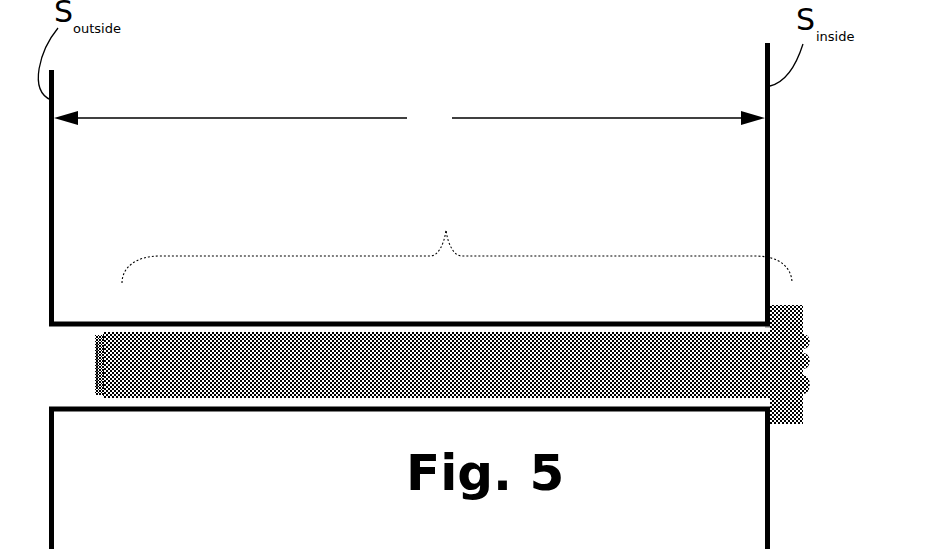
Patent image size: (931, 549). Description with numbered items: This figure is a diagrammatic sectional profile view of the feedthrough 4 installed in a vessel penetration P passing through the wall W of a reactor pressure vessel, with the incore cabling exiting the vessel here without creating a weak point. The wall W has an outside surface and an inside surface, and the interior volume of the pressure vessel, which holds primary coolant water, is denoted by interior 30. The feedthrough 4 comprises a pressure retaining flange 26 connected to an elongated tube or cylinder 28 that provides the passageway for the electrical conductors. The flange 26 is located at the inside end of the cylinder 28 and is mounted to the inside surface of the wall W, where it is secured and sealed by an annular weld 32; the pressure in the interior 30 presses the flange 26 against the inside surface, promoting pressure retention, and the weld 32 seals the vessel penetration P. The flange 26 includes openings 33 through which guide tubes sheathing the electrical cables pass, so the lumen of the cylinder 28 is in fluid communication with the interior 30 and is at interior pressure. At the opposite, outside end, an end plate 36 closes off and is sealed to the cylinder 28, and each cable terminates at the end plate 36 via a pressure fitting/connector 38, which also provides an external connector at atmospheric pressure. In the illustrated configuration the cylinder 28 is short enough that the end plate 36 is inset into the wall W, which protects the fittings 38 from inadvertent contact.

The feedthrough 4 is at (457, 237).
The pressure retaining flange 26 is at (778, 425).
The elongated tube or cylinder 28 is at (258, 377).
The interior volume of the pressure vessel 30 is at (834, 174).
The annular weld 32 is at (765, 330).
The openings 33 is at (810, 362).
The end plate 36 is at (112, 380).
The pressure fitting/connector 38 is at (97, 343).
The wall W is at (447, 127).
The vessel penetration P is at (328, 401).